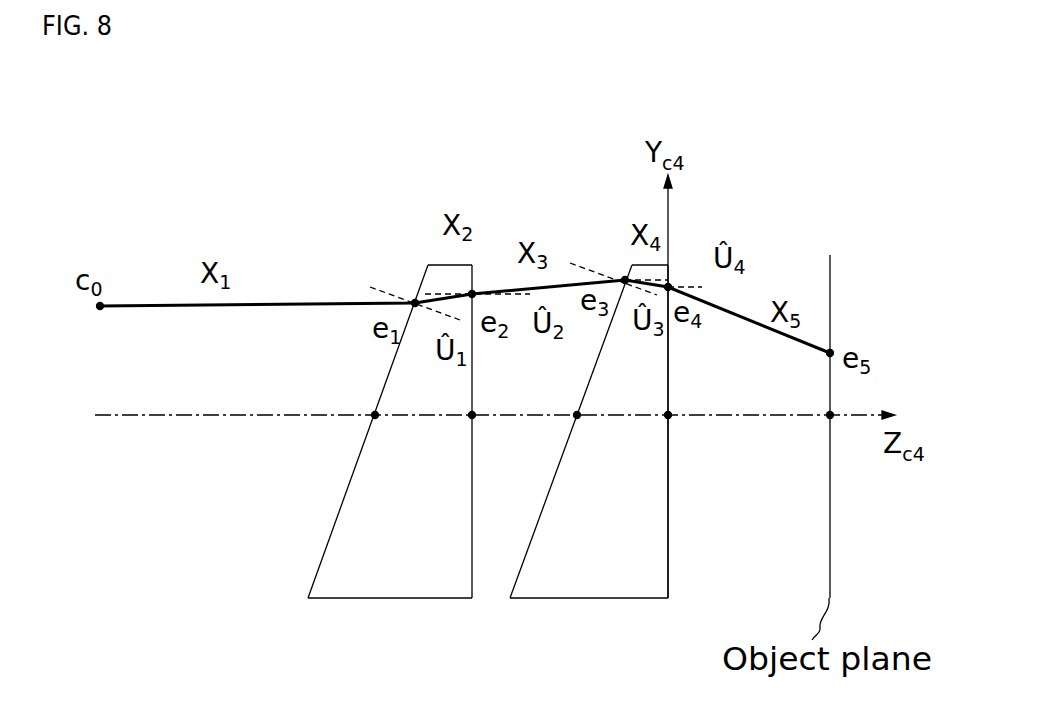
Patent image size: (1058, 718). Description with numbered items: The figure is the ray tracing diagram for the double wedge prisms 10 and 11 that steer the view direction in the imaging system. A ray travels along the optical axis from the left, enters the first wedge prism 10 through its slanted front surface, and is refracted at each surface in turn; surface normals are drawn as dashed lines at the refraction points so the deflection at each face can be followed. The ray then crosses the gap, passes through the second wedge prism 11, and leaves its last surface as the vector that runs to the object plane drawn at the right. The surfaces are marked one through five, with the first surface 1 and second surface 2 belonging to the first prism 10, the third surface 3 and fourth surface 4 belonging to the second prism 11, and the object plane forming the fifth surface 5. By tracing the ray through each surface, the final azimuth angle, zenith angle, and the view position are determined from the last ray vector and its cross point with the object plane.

The wedge prism 10 is at (384, 477).
The second wedge prism 11 is at (585, 477).
The first refracting surface Φ 1 is at (360, 431).
The second refracting surface Φ 2 is at (451, 431).
The third refracting surface Φ 3 is at (565, 431).
The fourth refracting surface Φ 4 is at (649, 431).
The object plane Φ 5 is at (809, 426).